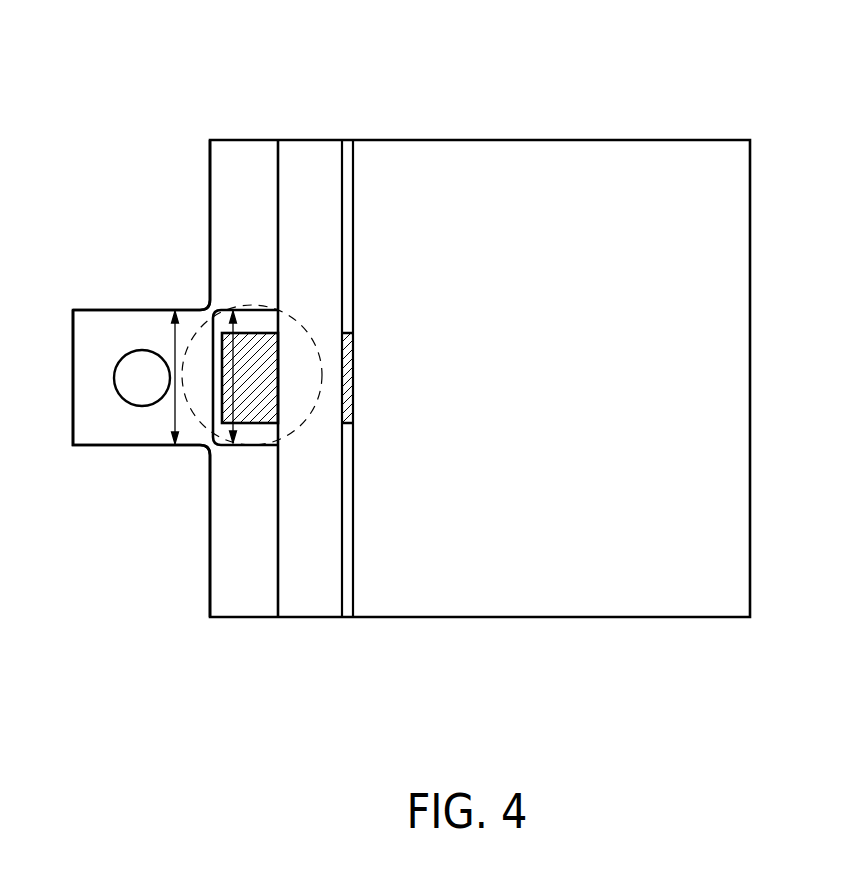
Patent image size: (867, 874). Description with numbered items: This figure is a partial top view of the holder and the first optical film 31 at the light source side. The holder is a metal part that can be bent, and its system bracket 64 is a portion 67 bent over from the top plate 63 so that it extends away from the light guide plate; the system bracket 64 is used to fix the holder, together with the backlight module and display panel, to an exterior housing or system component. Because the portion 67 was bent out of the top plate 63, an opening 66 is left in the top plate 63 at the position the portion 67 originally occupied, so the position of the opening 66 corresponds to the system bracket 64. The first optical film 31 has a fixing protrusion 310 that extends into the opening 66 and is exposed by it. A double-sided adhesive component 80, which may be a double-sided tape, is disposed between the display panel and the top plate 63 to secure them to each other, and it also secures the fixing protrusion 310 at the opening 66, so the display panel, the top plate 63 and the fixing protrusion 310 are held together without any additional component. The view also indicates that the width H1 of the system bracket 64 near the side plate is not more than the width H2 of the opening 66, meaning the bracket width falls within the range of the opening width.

The first optical film 31 is at (576, 160).
The top plate 63 is at (217, 553).
The system bracket 64 is at (97, 435).
The opening 66 is at (245, 432).
The portion 67 is at (198, 330).
The double-sided adhesive component 80 is at (313, 155).
The fixing protrusion 310 is at (253, 352).
The width of the system bracket H1 is at (173, 347).
The width of the opening H2 is at (207, 453).